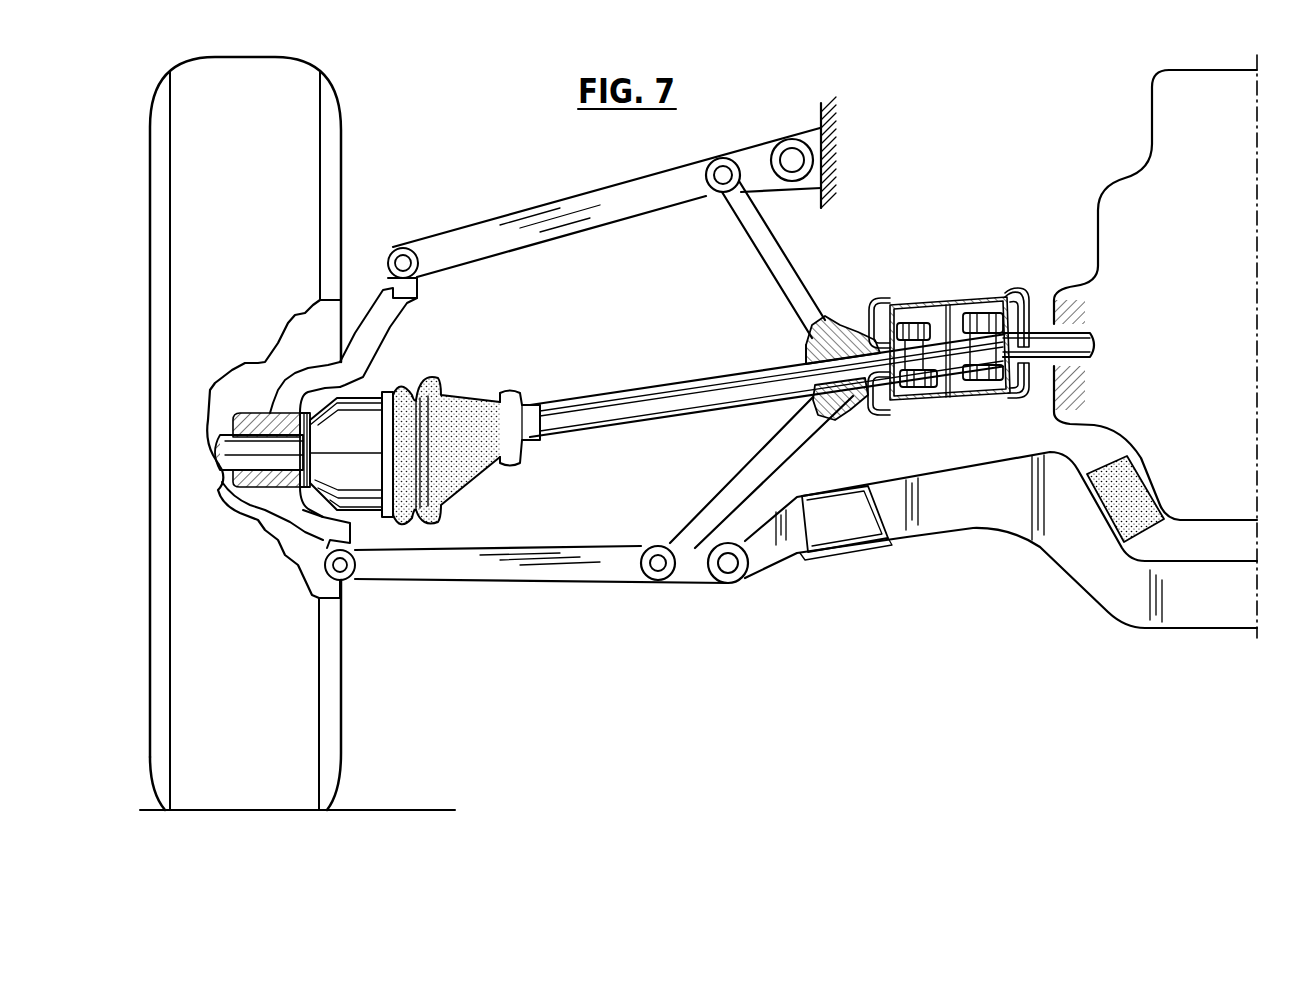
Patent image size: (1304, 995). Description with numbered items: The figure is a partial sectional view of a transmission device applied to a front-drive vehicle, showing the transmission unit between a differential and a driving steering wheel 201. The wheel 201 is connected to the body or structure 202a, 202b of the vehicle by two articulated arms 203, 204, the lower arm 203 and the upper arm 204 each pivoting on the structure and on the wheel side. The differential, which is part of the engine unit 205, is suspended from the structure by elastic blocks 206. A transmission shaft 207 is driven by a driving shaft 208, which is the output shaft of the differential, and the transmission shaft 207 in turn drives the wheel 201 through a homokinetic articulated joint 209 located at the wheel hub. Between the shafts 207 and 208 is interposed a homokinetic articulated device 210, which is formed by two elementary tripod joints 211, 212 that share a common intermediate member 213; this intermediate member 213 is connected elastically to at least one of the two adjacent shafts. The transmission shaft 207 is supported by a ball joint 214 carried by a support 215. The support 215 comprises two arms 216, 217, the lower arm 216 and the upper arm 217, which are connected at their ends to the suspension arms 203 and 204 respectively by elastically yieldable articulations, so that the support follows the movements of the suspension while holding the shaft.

The driving steering wheel 201 is at (305, 205).
The body structure 202a is at (845, 560).
The body structure 202b is at (836, 160).
The articulated arm 203 is at (498, 573).
The articulated arm 204 is at (557, 222).
The engine unit 205 is at (1165, 112).
The elastic block 206 is at (1135, 520).
The transmission shaft 207 is at (615, 412).
The driving shaft 208 is at (1033, 332).
The homokinetic articulated joint 209 is at (374, 371).
The homokinetic articulated device 210 is at (920, 293).
The elementary tripod joint 211 is at (977, 380).
The elementary tripod joint 212 is at (920, 400).
The common intermediate member 213 is at (960, 305).
The ball joint 214 is at (830, 333).
The support 215 is at (797, 340).
The arm 216 is at (765, 467).
The arm 217 is at (775, 259).